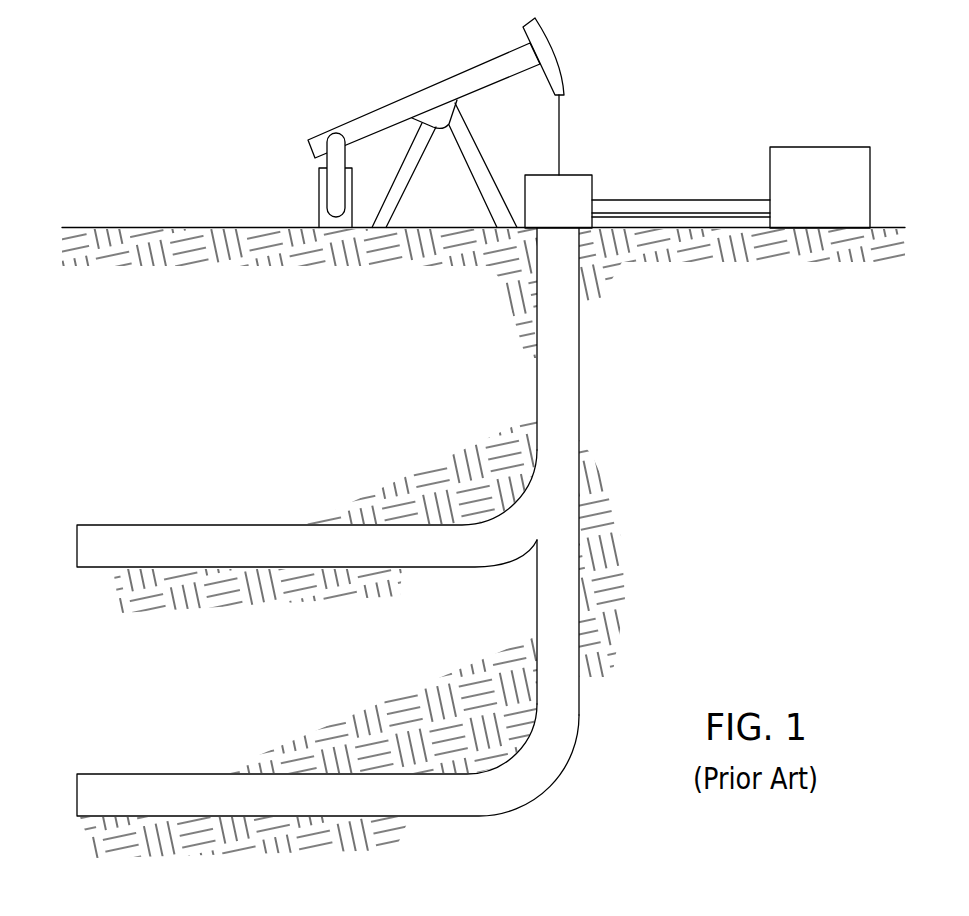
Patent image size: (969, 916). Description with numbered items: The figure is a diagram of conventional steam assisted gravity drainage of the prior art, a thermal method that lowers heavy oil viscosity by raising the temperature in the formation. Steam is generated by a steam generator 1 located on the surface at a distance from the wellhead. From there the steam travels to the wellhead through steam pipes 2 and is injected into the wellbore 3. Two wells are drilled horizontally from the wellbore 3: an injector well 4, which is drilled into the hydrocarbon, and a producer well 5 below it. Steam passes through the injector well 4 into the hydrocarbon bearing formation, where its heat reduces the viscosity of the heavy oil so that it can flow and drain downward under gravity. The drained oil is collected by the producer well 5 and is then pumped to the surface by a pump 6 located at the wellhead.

The steam generator 1 is at (828, 147).
The steam pipes 2 is at (700, 200).
The wellbore 3 is at (580, 347).
The injector well 4 is at (107, 525).
The producer well 5 is at (113, 774).
The pump 6 is at (563, 60).